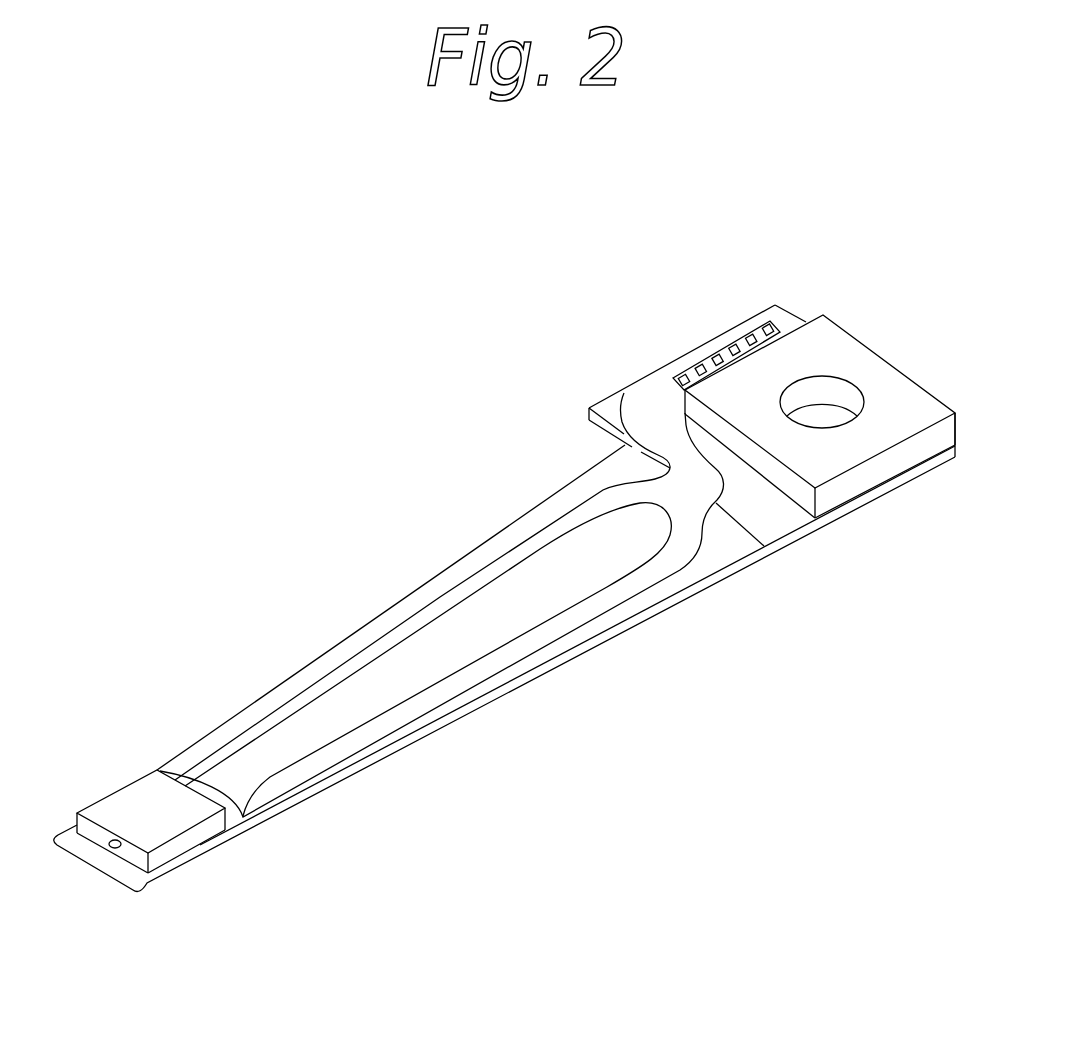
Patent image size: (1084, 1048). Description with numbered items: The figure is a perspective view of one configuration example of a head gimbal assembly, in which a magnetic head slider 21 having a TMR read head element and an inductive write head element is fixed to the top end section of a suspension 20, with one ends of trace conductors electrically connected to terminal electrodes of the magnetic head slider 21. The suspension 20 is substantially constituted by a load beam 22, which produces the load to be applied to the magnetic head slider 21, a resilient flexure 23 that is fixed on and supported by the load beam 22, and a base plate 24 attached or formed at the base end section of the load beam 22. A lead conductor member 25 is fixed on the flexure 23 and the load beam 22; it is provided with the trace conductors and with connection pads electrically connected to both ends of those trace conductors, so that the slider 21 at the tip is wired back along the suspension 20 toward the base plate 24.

The suspension 20 is at (525, 462).
The magnetic head slider 21 is at (120, 813).
The load beam 22 is at (763, 548).
The flexure 23 is at (603, 562).
The base plate 24 is at (888, 428).
The lead conductor member 25 is at (413, 710).